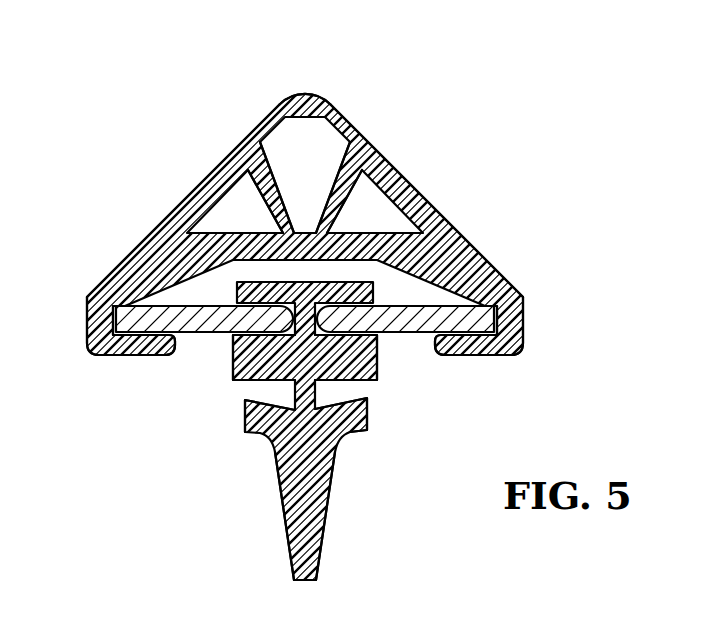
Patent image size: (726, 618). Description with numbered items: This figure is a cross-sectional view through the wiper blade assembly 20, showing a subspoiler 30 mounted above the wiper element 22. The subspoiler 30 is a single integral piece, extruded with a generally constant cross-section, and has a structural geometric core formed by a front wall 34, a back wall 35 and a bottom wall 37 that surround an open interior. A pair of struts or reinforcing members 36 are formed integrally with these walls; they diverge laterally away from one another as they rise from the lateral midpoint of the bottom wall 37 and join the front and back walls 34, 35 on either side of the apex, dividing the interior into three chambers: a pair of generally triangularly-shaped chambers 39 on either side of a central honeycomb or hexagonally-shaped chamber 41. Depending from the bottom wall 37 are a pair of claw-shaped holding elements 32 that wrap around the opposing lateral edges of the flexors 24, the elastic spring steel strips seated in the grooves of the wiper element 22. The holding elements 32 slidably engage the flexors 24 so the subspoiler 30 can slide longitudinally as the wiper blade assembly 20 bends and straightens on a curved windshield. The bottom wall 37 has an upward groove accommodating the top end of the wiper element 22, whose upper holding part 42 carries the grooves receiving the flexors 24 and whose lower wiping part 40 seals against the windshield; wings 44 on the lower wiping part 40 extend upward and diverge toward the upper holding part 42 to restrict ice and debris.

The wiper blade assembly 20 is at (358, 100).
The wiper element 22 is at (318, 543).
The flexors 24 is at (452, 318).
The subspoiler 30 is at (261, 106).
The holding elements 32 is at (121, 348).
The front wall 34 is at (388, 168).
The back wall 35 is at (215, 175).
The reinforcing members 36 is at (268, 160).
The bottom wall 37 is at (235, 250).
The triangularly-shaped chambers 39 is at (208, 216).
The lower wiping part 40 is at (316, 485).
The hexagonally-shaped chamber 41 is at (304, 134).
The upper holding part 42 is at (372, 368).
The wings 44 is at (250, 418).